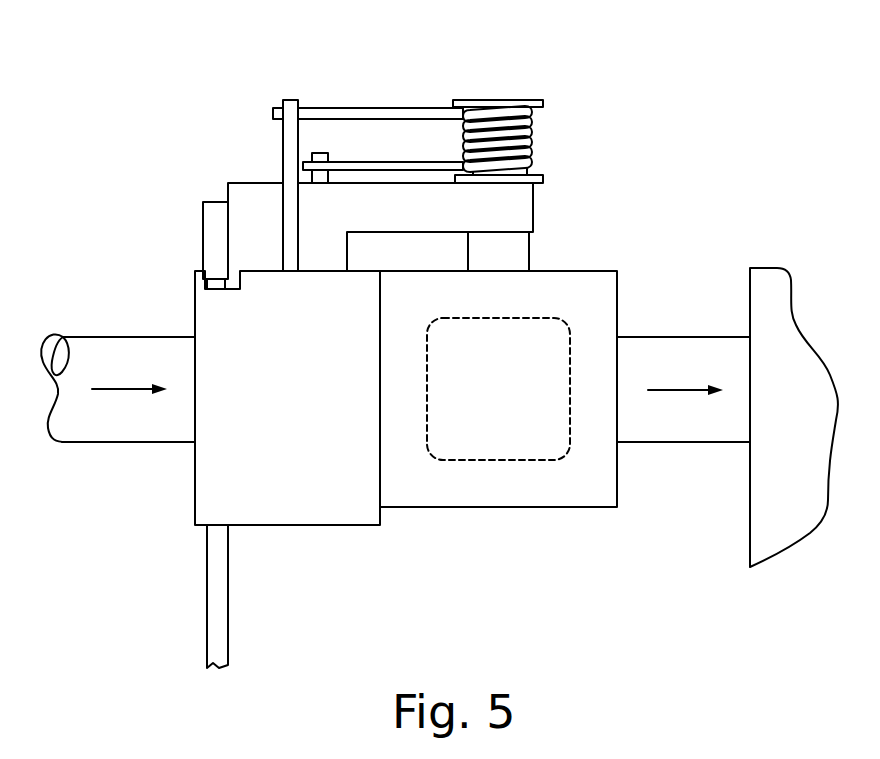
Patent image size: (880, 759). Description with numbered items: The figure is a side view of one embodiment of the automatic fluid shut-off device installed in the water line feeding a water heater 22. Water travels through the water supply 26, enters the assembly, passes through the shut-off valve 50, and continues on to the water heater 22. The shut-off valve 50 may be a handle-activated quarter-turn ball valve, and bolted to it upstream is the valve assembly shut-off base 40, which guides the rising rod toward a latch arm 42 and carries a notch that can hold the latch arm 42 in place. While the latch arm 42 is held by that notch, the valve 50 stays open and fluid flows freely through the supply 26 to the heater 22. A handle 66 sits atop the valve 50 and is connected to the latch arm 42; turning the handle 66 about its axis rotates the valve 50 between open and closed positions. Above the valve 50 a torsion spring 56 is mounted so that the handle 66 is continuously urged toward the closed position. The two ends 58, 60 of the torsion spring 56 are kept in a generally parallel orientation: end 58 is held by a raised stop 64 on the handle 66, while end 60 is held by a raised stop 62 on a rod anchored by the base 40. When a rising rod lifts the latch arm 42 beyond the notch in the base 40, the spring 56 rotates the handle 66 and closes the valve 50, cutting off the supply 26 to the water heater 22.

The water heater 22 is at (758, 280).
The fluid/water supply 26 is at (157, 345).
The valve assembly shut-off base 40 is at (327, 508).
The latch arm 42 is at (212, 213).
The shut-off valve 50 is at (550, 505).
The torsion spring 56 is at (532, 122).
The end of torsion spring 58 is at (367, 110).
The end of torsion spring 60 is at (397, 165).
The raised stop 62 is at (293, 97).
The raised stop 64 is at (325, 153).
The handle 66 is at (500, 197).